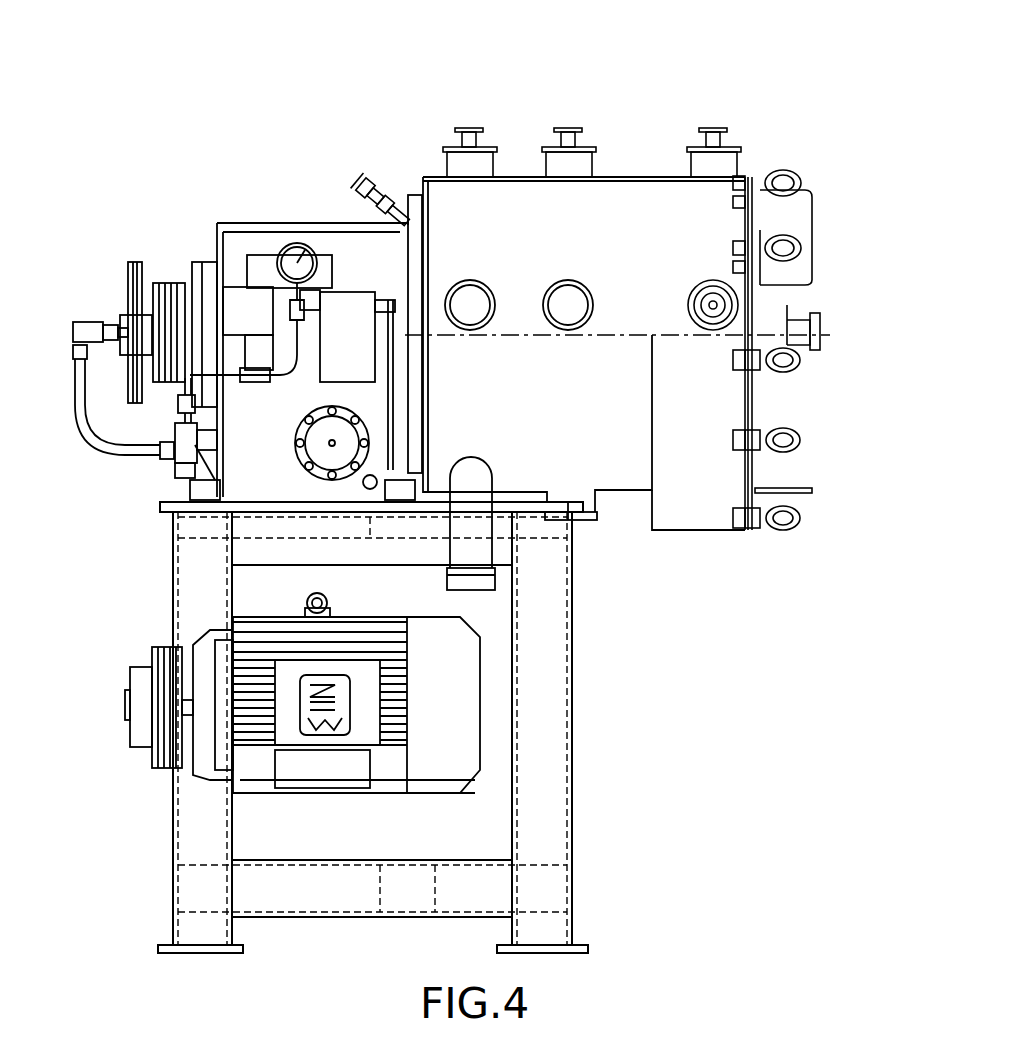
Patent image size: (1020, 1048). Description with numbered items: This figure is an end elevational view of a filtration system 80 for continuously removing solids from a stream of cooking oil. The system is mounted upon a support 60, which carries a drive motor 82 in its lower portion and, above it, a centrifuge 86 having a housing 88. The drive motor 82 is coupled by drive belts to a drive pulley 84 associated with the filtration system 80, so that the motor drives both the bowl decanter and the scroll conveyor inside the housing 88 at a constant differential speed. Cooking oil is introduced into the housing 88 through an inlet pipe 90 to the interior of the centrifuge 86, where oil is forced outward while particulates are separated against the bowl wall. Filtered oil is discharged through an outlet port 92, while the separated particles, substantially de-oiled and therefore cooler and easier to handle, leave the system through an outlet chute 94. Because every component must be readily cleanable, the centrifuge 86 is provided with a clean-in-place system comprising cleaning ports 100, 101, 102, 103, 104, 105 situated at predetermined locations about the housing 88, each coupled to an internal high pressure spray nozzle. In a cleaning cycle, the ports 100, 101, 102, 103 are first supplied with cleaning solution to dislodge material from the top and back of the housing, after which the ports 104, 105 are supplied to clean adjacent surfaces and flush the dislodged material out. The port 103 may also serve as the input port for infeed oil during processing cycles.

The support 60 is at (572, 740).
The filtration system 80 is at (333, 170).
The drive motor 82 is at (360, 795).
The drive pulley 84 is at (120, 260).
The centrifuge 86 is at (645, 177).
The housing 88 is at (720, 402).
The inlet pipe 90 is at (578, 520).
The outlet port 92 is at (450, 555).
The outlet chute 94 is at (710, 532).
The cleaning port 100 is at (565, 128).
The cleaning port 101 is at (470, 128).
The cleaning port 102 is at (375, 178).
The cleaning port 103 is at (818, 322).
The cleaning port 104 is at (730, 130).
The cleaning port 105 is at (690, 285).